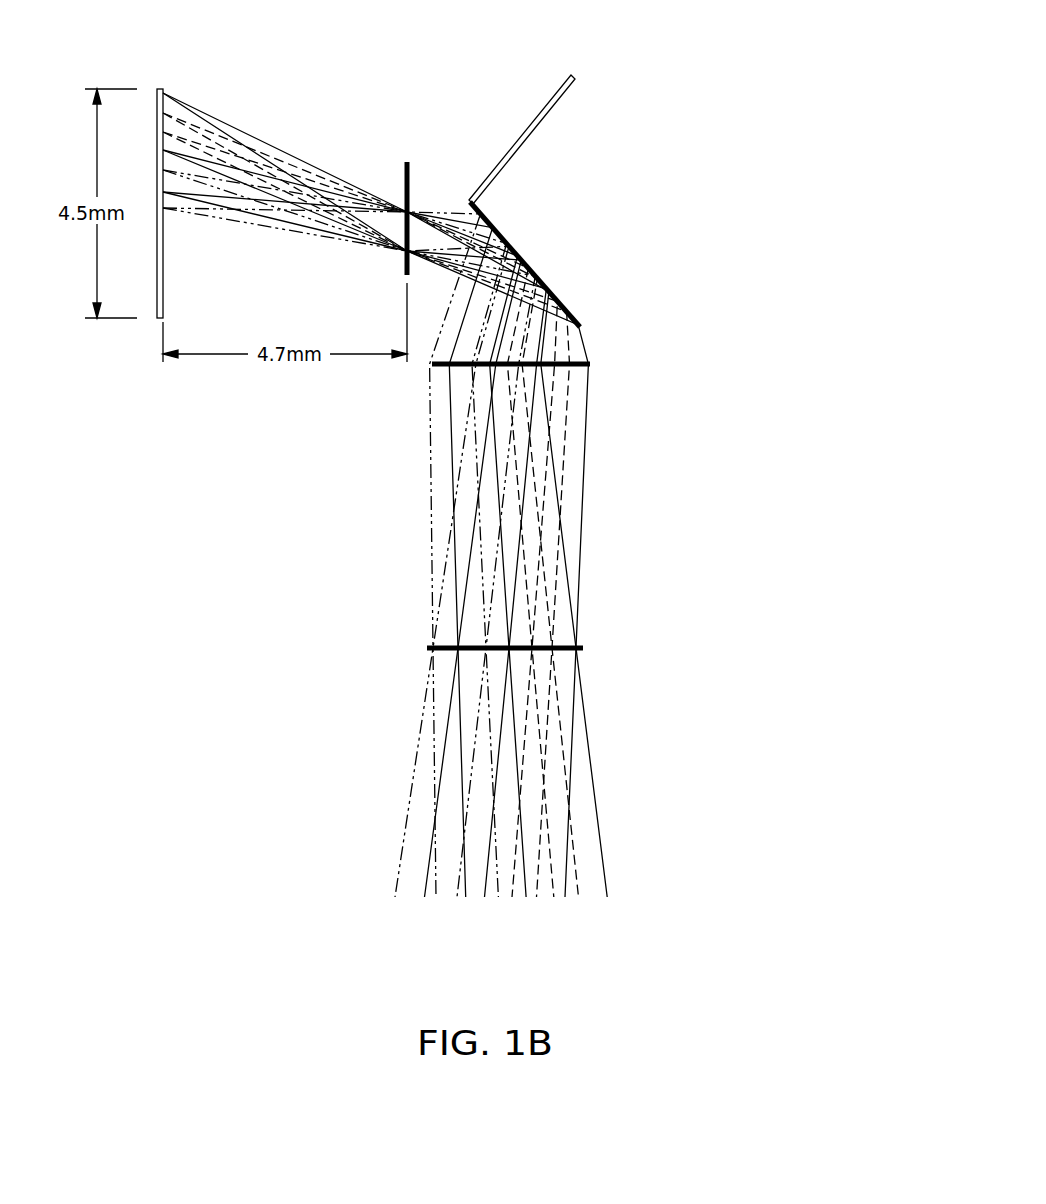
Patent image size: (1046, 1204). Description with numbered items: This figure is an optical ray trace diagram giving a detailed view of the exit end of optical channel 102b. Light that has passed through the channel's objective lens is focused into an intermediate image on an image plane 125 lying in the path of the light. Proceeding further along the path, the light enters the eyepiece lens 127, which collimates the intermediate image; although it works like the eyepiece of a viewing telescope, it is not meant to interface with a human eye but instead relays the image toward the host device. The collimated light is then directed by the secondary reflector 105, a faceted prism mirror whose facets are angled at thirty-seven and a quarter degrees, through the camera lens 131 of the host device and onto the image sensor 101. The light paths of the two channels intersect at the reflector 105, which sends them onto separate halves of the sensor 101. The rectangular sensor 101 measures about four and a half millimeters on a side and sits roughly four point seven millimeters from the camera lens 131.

The image sensor 101 is at (131, 341).
The camera lens 131 is at (402, 173).
The secondary reflector 105 is at (514, 141).
The eyepiece lens 127 is at (583, 357).
The image plane 125 is at (578, 648).
The optical channel 102b is at (612, 772).